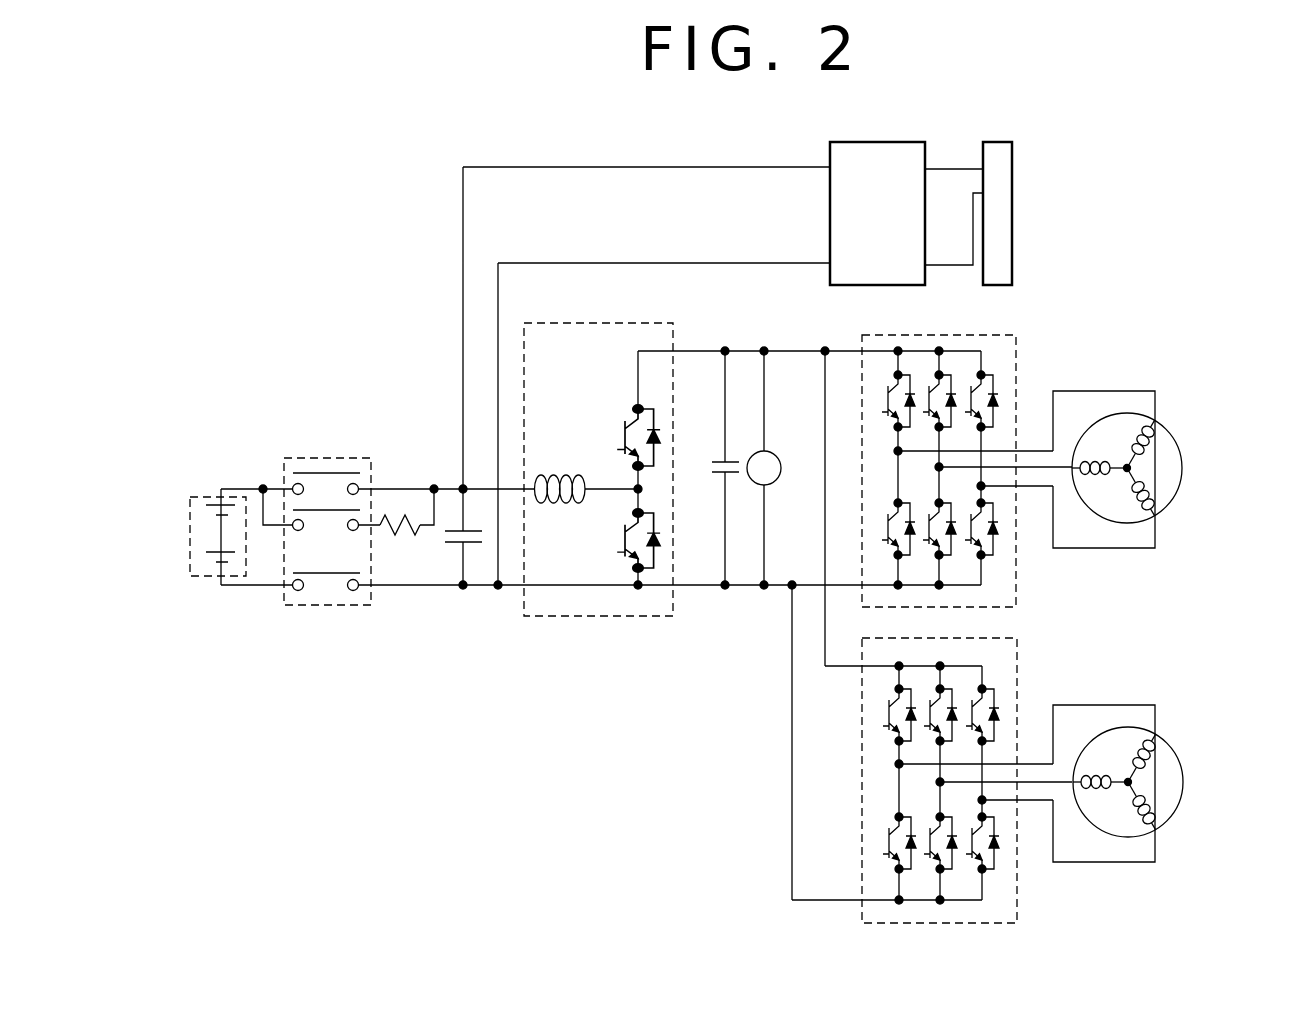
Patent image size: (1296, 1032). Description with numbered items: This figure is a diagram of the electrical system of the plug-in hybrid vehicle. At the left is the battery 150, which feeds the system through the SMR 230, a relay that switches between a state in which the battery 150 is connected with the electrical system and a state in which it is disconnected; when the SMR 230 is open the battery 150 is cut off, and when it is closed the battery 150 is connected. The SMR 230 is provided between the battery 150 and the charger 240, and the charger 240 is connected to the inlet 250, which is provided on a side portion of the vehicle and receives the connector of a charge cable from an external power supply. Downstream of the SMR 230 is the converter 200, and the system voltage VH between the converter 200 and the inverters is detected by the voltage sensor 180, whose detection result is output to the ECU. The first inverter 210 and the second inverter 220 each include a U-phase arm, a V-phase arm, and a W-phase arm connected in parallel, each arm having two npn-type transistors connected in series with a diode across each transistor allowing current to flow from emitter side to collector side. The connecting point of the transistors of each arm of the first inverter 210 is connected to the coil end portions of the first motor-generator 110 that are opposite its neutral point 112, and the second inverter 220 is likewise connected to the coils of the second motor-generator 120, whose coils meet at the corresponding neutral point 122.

The first motor-generator 110 is at (1156, 437).
The neutral point 112 is at (1127, 468).
The second motor-generator 120 is at (1147, 760).
The neutral point of second motor generator 122 is at (1128, 782).
The battery 150 is at (204, 497).
The voltage sensor 180 is at (777, 484).
The converter 200 is at (658, 323).
The first inverter 210 is at (1016, 562).
The second inverter 220 is at (1017, 875).
The SMR (System Main Relay) 230 is at (317, 458).
The charger 240 is at (830, 208).
The inlet 250 is at (1012, 217).